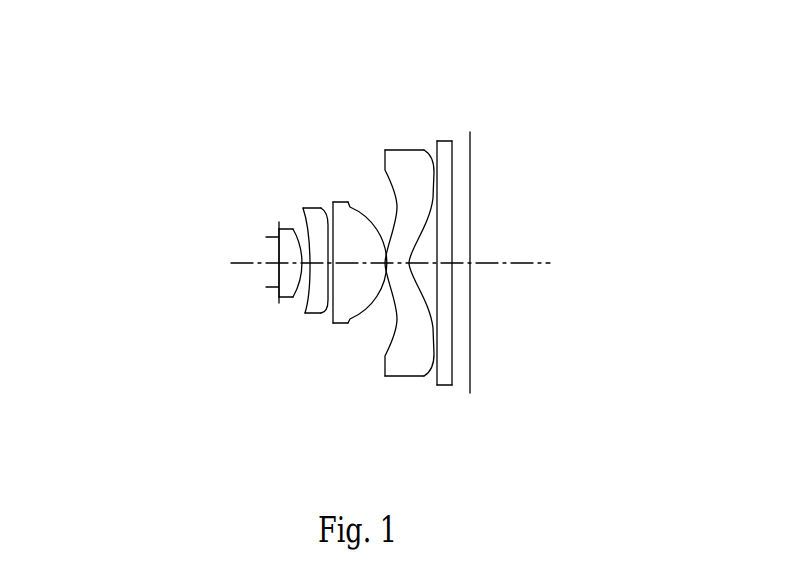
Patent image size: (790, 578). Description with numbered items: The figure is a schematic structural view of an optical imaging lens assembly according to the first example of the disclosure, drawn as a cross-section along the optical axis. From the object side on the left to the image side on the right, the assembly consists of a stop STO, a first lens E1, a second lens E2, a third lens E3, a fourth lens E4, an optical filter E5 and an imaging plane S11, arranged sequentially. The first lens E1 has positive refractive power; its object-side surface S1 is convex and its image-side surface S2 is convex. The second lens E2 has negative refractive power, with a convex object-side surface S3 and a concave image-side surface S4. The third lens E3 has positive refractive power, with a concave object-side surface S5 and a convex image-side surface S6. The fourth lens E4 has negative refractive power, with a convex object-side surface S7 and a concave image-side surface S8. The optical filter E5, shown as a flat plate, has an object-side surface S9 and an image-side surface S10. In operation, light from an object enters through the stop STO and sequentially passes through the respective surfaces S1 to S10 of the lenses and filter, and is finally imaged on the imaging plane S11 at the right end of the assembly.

The stop STO is at (278, 222).
The first lens E1 is at (173, 259).
The second lens E2 is at (241, 259).
The third lens E3 is at (327, 259).
The fourth lens E4 is at (436, 259).
The optical filter E5 is at (522, 259).
The object-side surface of the first lens S1 is at (279, 263).
The image-side surface of the first lens S2 is at (302, 263).
The object-side surface of the second lens S3 is at (310, 263).
The image-side surface of the second lens S4 is at (328, 263).
The object-side surface of the third lens S5 is at (333, 263).
The image-side surface of the third lens S6 is at (386, 263).
The object-side surface of the fourth lens S7 is at (385, 263).
The image-side surface of the fourth lens S8 is at (409, 263).
The object-side surface of the optical filter S9 is at (437, 263).
The image-side surface of the optical filter S10 is at (452, 263).
The imaging plane S11 is at (470, 263).